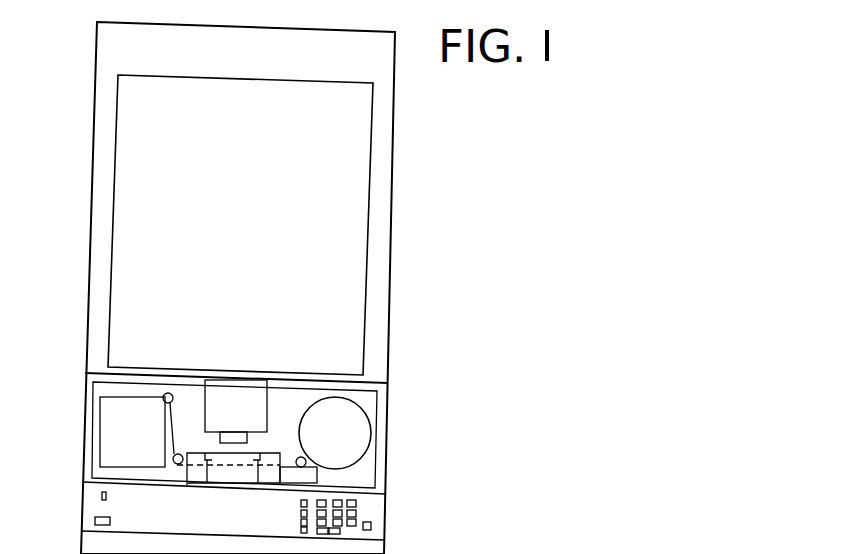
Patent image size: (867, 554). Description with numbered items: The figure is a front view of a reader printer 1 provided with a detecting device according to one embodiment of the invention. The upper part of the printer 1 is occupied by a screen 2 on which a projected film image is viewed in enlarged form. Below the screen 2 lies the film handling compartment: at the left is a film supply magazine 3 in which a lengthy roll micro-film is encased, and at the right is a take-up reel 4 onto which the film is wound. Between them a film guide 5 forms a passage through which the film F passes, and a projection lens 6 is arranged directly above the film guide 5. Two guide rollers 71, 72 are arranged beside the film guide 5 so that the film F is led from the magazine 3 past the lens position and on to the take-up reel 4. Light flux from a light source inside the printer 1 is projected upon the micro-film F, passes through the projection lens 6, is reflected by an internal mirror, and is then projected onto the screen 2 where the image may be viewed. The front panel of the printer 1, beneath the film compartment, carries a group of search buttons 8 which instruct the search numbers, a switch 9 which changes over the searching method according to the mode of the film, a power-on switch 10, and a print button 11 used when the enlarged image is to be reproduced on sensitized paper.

The reader printer 1 is at (90, 241).
The screen 2 is at (365, 188).
The film supply magazine 3 is at (99, 420).
The take-up reel 4 is at (371, 433).
The film guide 5 is at (228, 460).
The projection lens 6 is at (247, 438).
The guide roller 71 is at (173, 457).
The guide roller 72 is at (304, 458).
The film F is at (177, 422).
The group of search buttons 8 is at (358, 512).
The switch 9 is at (99, 495).
The power-on switch 10 is at (95, 520).
The print button 11 is at (372, 526).